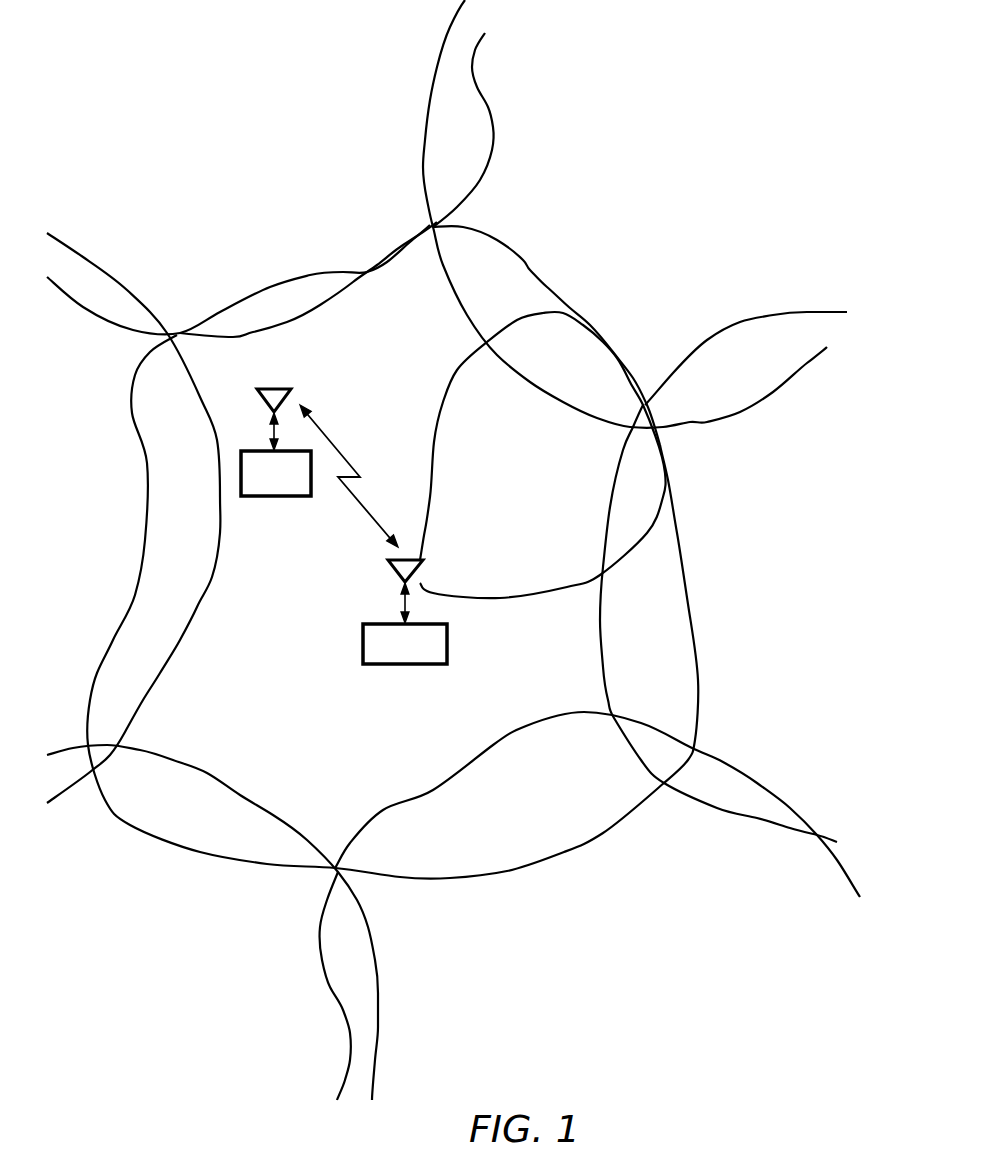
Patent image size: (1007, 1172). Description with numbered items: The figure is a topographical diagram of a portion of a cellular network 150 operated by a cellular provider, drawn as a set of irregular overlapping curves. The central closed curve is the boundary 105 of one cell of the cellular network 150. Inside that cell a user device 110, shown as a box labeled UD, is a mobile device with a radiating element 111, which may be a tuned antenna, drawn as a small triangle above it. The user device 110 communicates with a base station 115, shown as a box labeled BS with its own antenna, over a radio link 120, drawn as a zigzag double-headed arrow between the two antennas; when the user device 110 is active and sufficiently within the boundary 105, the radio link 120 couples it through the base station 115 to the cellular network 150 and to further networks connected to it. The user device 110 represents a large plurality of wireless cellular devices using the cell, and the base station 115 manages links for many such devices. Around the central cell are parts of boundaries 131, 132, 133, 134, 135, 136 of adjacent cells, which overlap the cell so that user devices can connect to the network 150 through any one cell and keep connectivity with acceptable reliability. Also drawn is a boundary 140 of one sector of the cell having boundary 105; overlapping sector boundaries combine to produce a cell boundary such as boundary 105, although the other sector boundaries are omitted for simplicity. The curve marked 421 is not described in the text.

The cellular network 150 is at (462, 597).
The boundary 105 is at (297, 277).
The user device 110 is at (239, 473).
The radiating element 111 is at (273, 385).
The base station 115 is at (382, 620).
The radio link 120 is at (338, 448).
The boundary 131 is at (432, 113).
The boundary 132 is at (745, 317).
The boundary 133 is at (732, 763).
The boundary 134 is at (223, 780).
The boundary 135 is at (110, 263).
The boundary 136 is at (493, 120).
The boundary 140 is at (440, 452).
The cell boundary 421 is at (570, 305).